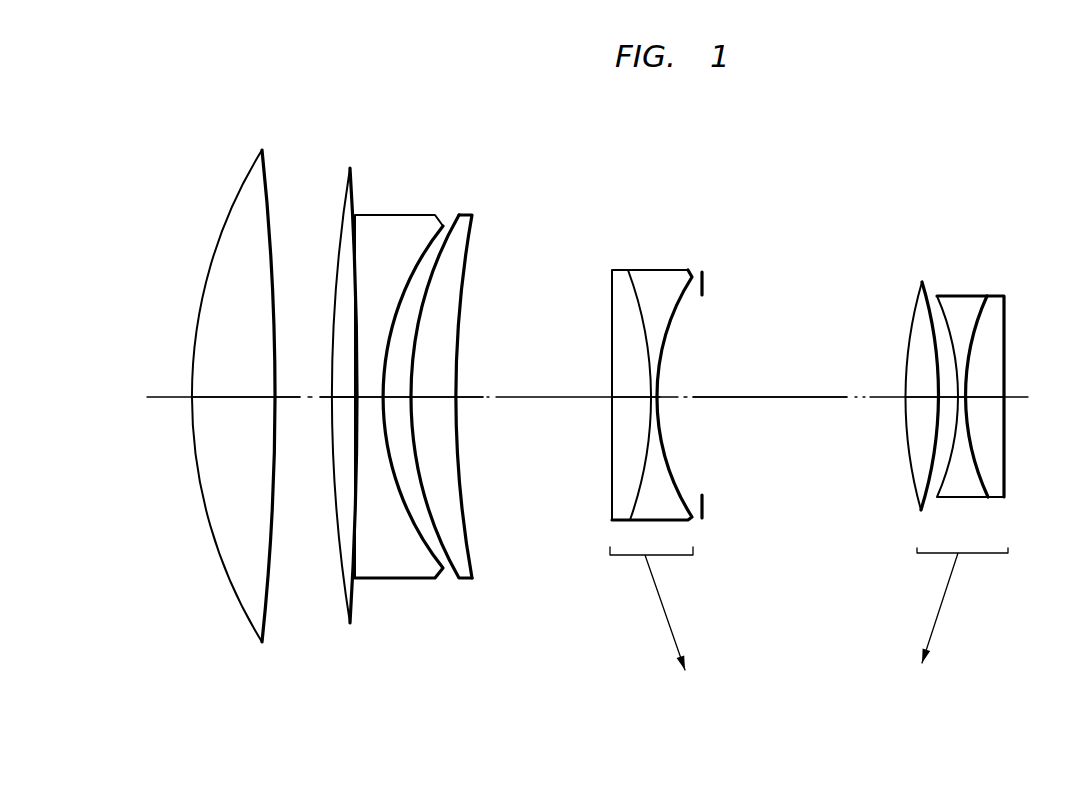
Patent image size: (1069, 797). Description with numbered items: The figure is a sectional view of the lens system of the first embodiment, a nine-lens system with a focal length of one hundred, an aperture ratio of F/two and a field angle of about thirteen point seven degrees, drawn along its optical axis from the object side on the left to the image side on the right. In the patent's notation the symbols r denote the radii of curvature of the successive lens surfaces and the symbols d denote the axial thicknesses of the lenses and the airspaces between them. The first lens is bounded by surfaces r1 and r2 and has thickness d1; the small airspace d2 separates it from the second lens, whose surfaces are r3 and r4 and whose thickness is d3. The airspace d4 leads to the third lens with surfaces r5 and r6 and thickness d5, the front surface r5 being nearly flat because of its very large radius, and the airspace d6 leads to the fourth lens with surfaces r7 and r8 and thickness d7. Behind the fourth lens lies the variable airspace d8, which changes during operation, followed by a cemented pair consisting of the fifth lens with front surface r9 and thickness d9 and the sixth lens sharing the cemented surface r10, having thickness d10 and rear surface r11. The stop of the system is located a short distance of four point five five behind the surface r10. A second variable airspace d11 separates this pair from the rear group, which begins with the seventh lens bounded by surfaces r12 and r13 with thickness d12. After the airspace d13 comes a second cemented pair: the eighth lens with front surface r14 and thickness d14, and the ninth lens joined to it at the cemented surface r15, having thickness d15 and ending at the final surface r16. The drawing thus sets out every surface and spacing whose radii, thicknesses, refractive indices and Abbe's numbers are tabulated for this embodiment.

The radius of curvature of the first lens surface r1 is at (245, 177).
The radius of curvature of the second lens surface r2 is at (268, 165).
The radius of curvature of the third lens surface r3 is at (340, 180).
The radius of curvature of the fourth lens surface r4 is at (352, 178).
The radius of curvature of the fifth lens surface r5 is at (356, 232).
The radius of curvature of the sixth lens surface r6 is at (432, 243).
The radius of curvature of the seventh lens surface r7 is at (458, 223).
The radius of curvature of the eighth lens surface r8 is at (473, 227).
The radius of curvature of the ninth lens surface r9 is at (612, 274).
The radius of curvature of the tenth lens surface r10 is at (629, 282).
The radius of curvature of the eleventh lens surface r11 is at (690, 281).
The radius of curvature of the twelfth lens surface r12 is at (917, 303).
The radius of curvature of the thirteenth lens surface r13 is at (925, 293).
The radius of curvature of the fourteenth lens surface r14 is at (938, 310).
The radius of curvature of the fifteenth lens surface r15 is at (988, 302).
The radius of curvature of the sixteenth lens surface r16 is at (1004, 300).
The thickness of the first lens d1 is at (236, 397).
The airspace between the first and second lenses d2 is at (270, 394).
The thickness of the second lens d3 is at (297, 397).
The airspace between the second and third lenses d4 is at (343, 396).
The thickness of the third lens d5 is at (370, 398).
The airspace between the third and fourth lenses d6 is at (392, 397).
The thickness of the fourth lens d7 is at (425, 398).
The variable airspace between the fourth and fifth lenses d8 is at (519, 398).
The thickness of the fifth lens d9 is at (623, 398).
The thickness of the sixth lens d10 is at (658, 398).
The variable airspace between the sixth and seventh lenses d11 is at (772, 398).
The thickness of the seventh lens d12 is at (920, 398).
The airspace between the seventh and eighth lenses d13 is at (950, 395).
The thickness of the eighth lens d14 is at (963, 404).
The thickness of the ninth lens d15 is at (978, 398).